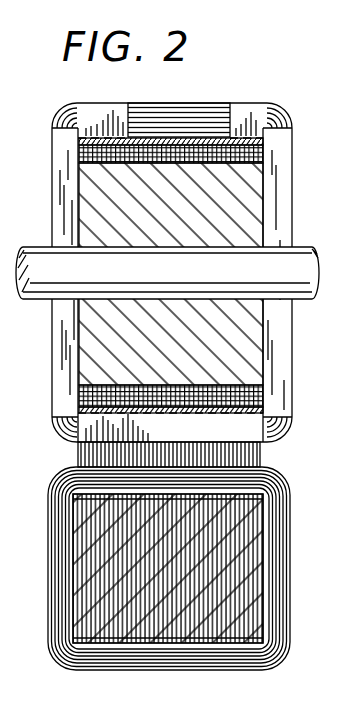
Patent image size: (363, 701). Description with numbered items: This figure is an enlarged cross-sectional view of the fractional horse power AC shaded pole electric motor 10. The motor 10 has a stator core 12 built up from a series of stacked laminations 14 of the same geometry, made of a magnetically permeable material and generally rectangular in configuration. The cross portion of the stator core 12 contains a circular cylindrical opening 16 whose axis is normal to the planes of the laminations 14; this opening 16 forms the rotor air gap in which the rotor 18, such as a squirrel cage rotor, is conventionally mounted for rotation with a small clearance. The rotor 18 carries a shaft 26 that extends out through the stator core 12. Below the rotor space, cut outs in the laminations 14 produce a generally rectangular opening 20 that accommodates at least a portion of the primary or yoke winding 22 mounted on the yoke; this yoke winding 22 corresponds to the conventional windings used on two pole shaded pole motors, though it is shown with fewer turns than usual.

The electric motor 10 is at (306, 126).
The stator core 12 is at (172, 555).
The laminations 14 is at (247, 524).
The cylindrical opening 16 is at (263, 158).
The rotor 18 is at (252, 205).
The rectangular opening 20 is at (250, 458).
The yoke winding 22 is at (63, 538).
The shaft 26 is at (305, 300).